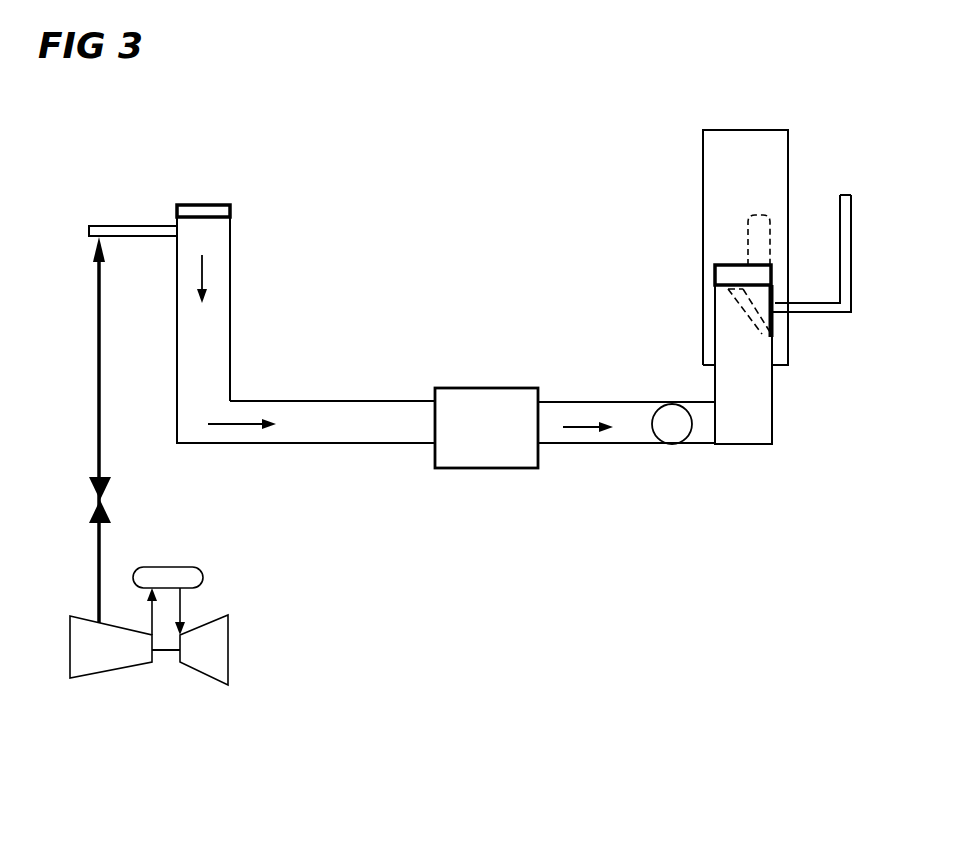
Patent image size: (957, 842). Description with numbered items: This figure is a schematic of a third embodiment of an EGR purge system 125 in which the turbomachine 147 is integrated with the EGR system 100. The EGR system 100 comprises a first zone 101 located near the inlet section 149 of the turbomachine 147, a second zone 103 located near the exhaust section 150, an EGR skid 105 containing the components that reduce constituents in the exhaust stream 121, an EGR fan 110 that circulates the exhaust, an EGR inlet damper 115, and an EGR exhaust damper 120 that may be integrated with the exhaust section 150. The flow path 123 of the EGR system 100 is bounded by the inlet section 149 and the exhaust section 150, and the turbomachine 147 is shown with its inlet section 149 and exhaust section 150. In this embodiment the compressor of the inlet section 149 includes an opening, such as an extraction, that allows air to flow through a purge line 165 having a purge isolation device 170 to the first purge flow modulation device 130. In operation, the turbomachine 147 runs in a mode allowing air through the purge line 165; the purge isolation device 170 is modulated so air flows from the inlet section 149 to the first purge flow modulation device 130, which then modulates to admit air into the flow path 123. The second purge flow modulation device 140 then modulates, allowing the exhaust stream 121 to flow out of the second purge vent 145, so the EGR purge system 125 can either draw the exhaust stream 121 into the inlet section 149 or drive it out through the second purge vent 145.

The EGR system 100 is at (465, 283).
The first zone 101 is at (163, 372).
The second zone 103 is at (792, 409).
The EGR skid 105 is at (514, 468).
The EGR fan 110 is at (674, 444).
The EGR inlet damper 115 is at (178, 207).
The EGR exhaust damper 120 is at (725, 265).
The exhaust stream 121 is at (506, 446).
The flow path 123 is at (365, 438).
The EGR purge system 125 is at (485, 528).
The first purge flow modulation device 130 is at (150, 225).
The second purge flow modulation device 140 is at (773, 335).
The second purge vent 145 is at (852, 225).
The turbomachine 147 is at (189, 693).
The inlet section 149 is at (125, 661).
The exhaust section 150 is at (668, 160).
The purge line 165 is at (100, 545).
The purge isolation device 170 is at (93, 496).